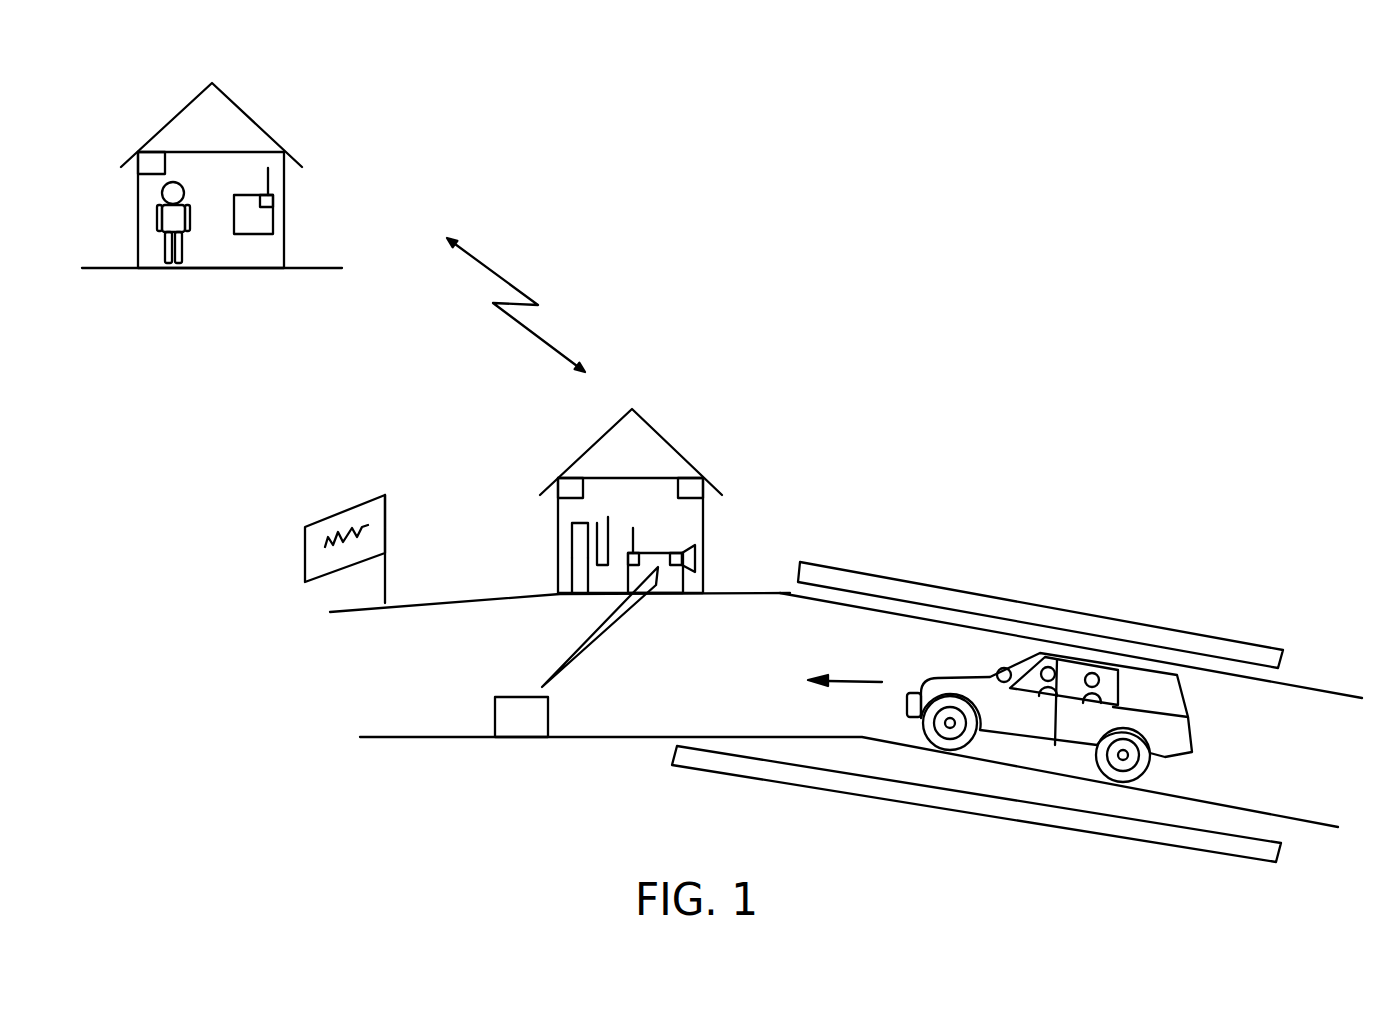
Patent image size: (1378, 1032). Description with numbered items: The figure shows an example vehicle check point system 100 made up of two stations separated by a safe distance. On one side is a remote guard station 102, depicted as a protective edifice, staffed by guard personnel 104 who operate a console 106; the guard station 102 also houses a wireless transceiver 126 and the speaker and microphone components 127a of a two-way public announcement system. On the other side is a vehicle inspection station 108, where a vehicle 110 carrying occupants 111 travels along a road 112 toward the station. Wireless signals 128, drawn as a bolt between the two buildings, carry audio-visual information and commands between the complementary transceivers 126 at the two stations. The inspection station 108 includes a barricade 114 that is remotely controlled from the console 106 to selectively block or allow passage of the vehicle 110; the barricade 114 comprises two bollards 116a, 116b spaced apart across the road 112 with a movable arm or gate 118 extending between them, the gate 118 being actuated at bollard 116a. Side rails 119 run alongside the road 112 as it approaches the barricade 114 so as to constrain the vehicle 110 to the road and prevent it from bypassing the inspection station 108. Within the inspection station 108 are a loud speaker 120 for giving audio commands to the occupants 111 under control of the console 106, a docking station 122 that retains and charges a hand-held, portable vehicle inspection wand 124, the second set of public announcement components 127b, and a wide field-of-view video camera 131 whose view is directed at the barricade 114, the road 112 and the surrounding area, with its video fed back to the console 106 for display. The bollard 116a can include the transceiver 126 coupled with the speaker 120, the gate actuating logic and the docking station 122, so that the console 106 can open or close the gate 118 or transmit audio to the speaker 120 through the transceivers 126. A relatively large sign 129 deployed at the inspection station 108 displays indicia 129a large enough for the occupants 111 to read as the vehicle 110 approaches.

The vehicle check point system 100 is at (732, 132).
The remote guard station 102 is at (284, 120).
The guard personnel 104 is at (182, 268).
The console 106 is at (265, 218).
The vehicle inspection station 108 is at (702, 448).
The vehicle 110 is at (1210, 728).
The occupants 111 is at (1052, 665).
The road 112 is at (1322, 692).
The barricade 114 is at (514, 625).
The bollard 116a is at (667, 553).
The bollard 116b is at (548, 718).
The gate 118 is at (625, 615).
The side rails 119 is at (930, 587).
The loud speaker 120 is at (697, 562).
The docking station 122 is at (575, 573).
The vehicle inspection wand 124 is at (583, 542).
The wireless transceiver 126 is at (275, 196).
The PA components at guard station 127a is at (145, 177).
The PA components at inspection station 127b is at (572, 495).
The wireless signals 128 is at (515, 287).
The sign 129 is at (389, 488).
The indicia 129a is at (337, 523).
The wide FOV video camera 131 is at (690, 480).